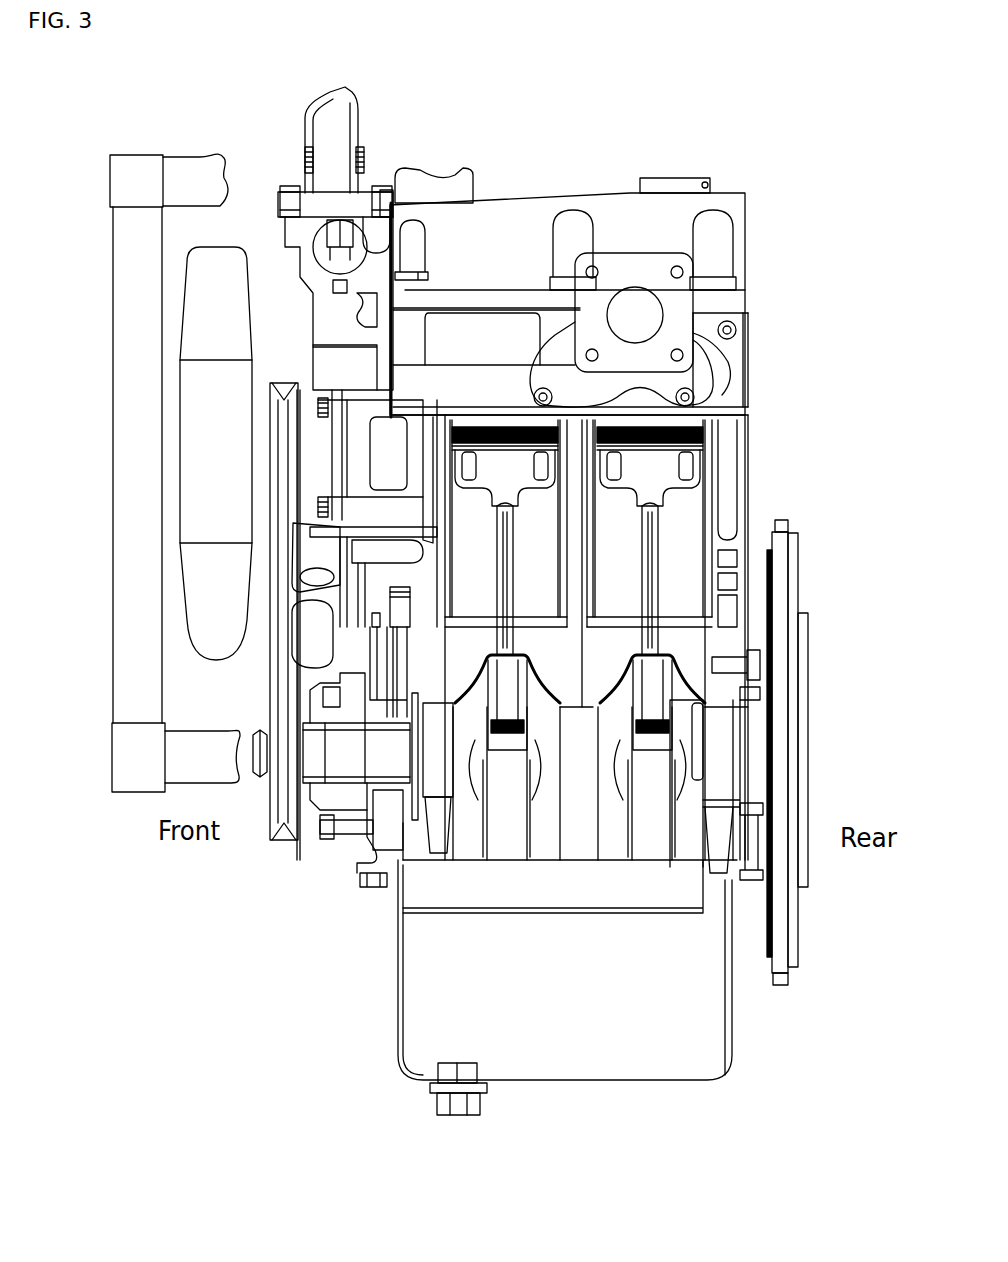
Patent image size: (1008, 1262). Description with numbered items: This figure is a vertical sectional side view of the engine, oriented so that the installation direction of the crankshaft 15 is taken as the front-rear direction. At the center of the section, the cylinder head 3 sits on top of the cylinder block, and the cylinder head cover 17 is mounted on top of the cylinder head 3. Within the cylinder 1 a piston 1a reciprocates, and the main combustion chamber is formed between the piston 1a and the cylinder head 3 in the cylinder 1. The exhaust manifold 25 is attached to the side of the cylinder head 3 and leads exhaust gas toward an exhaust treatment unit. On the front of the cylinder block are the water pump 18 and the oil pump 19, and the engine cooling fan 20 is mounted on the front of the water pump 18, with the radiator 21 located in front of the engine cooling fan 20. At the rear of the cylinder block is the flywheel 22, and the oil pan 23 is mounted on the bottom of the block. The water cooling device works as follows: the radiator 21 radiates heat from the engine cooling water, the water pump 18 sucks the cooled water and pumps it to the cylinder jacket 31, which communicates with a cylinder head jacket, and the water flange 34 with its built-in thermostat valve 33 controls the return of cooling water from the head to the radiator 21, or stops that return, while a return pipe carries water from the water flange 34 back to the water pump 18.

The cylinder 1 is at (573, 525).
The piston 1a is at (493, 480).
The cylinder head 3 is at (738, 398).
The crankshaft 15 is at (433, 780).
The cylinder head cover 17 is at (618, 208).
The water pump 18 is at (310, 387).
The oil pump 19 is at (325, 830).
The engine cooling fan 20 is at (224, 275).
The radiator 21 is at (125, 640).
The flywheel 22 is at (797, 933).
The oil pan 23 is at (408, 1013).
The exhaust manifold 25 is at (715, 363).
The cylinder jacket 31 is at (728, 468).
The thermostat valve 33 is at (353, 192).
The water flange 34 is at (352, 148).